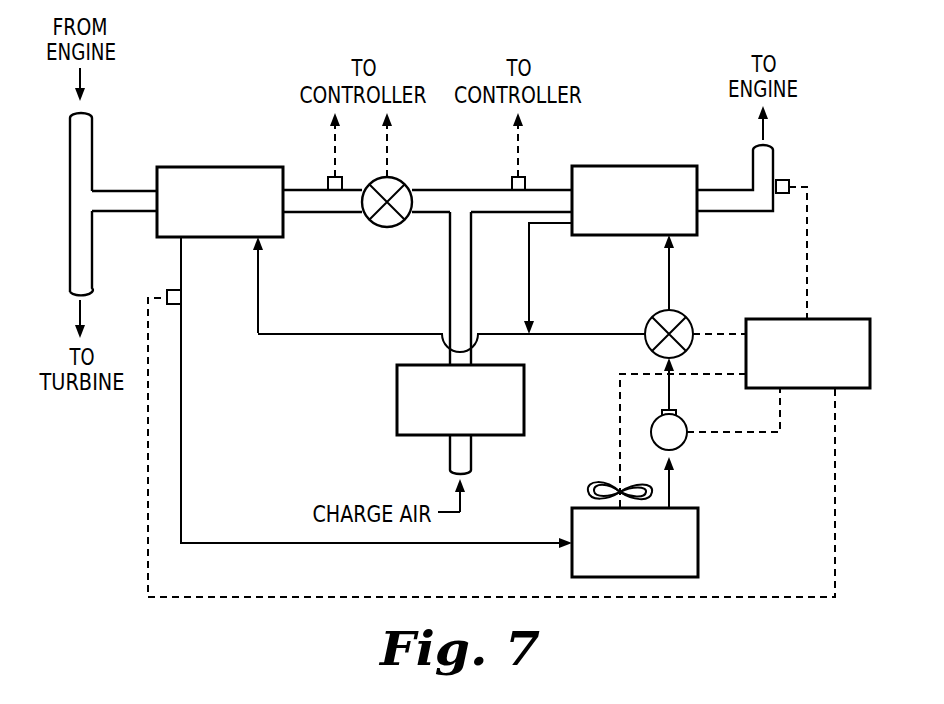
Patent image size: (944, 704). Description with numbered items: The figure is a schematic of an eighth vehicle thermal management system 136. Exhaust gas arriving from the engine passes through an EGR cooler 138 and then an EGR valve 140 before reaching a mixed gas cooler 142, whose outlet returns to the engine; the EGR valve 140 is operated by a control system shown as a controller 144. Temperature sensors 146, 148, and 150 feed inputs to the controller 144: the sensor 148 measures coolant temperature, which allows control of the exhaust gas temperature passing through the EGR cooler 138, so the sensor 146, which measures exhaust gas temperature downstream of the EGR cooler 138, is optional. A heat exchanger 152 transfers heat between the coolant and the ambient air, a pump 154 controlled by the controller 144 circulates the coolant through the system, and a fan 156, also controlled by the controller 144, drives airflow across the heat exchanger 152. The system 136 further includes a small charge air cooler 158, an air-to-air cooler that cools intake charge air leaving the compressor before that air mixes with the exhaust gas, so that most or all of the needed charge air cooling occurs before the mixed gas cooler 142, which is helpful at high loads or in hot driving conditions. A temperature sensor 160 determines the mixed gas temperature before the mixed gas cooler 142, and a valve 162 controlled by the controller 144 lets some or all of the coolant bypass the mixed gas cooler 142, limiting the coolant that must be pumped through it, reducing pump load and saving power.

The vehicle thermal management system 136 is at (619, 58).
The EGR cooler 138 is at (192, 167).
The EGR valve 140 is at (387, 228).
The mixed gas cooler 142 is at (642, 166).
The controller 144 is at (853, 319).
The temperature sensor 146 is at (328, 182).
The temperature sensor 148 is at (175, 290).
The temperature sensor 150 is at (781, 180).
The heat exchanger 152 is at (699, 538).
The pump 154 is at (682, 448).
The fan 156 is at (588, 492).
The charge air cooler 158 is at (397, 402).
The temperature sensor 160 is at (512, 183).
The valve 162 is at (655, 315).